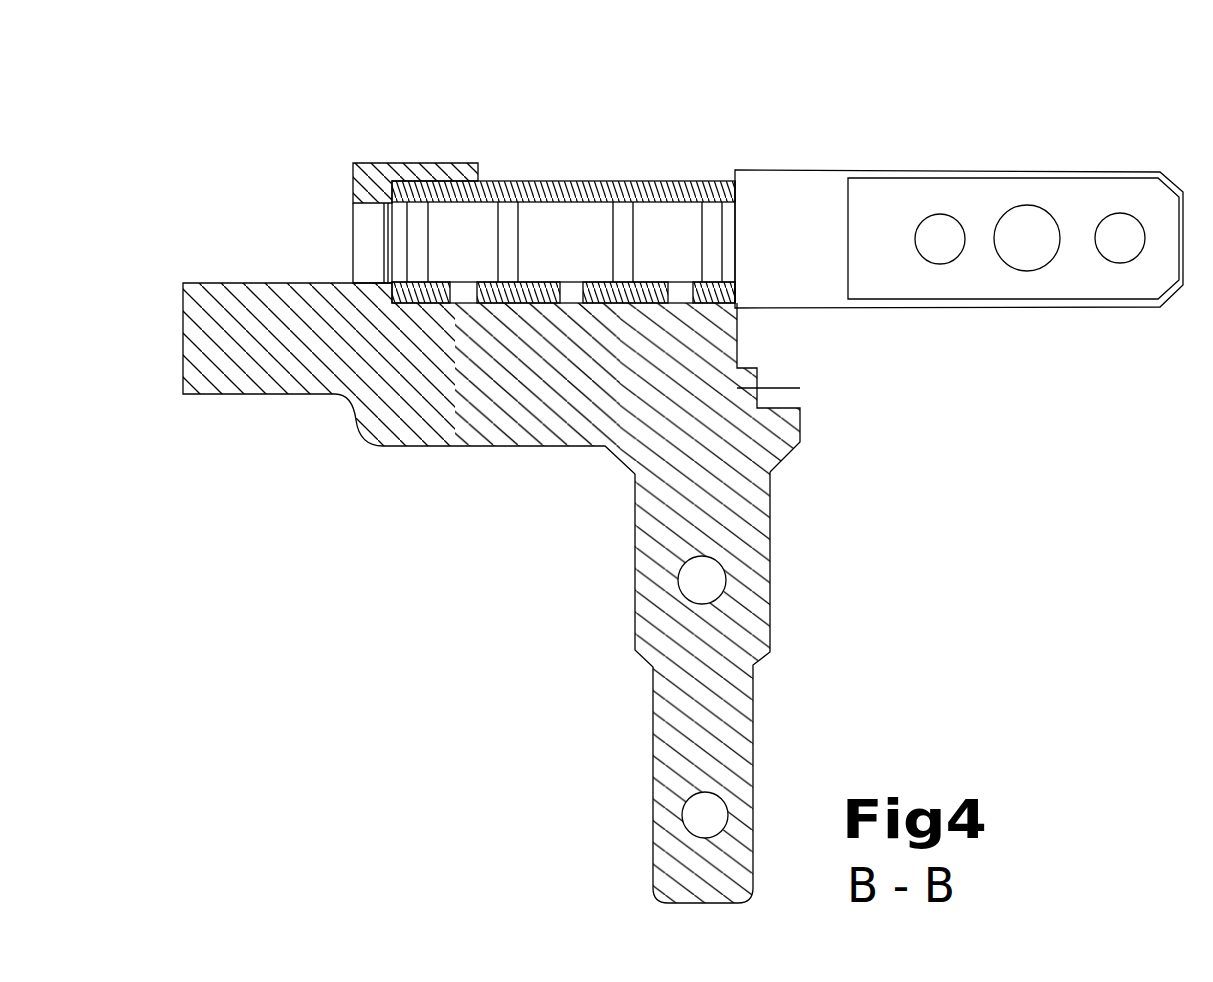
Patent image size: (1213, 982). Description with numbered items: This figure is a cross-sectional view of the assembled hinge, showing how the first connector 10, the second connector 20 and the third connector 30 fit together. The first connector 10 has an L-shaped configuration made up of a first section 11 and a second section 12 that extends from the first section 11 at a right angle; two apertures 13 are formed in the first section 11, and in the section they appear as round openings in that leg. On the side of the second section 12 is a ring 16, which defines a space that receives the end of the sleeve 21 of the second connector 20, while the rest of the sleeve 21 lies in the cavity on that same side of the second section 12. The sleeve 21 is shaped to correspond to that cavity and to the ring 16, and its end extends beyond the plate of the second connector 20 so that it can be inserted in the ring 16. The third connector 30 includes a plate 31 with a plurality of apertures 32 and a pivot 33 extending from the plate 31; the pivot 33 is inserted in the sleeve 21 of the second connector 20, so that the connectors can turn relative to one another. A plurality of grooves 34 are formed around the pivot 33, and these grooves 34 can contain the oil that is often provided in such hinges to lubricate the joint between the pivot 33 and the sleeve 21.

The first connector 10 is at (412, 630).
The first section 11 is at (693, 762).
The second section 12 is at (442, 445).
The apertures 13 is at (693, 585).
The ring 16 is at (450, 180).
The second connector 20 is at (598, 105).
The sleeve 21 is at (500, 183).
The third connector 30 is at (1023, 385).
The plate 31 is at (864, 220).
The apertures 32 is at (943, 225).
The pivot 33 is at (677, 220).
The grooves 34 is at (410, 222).